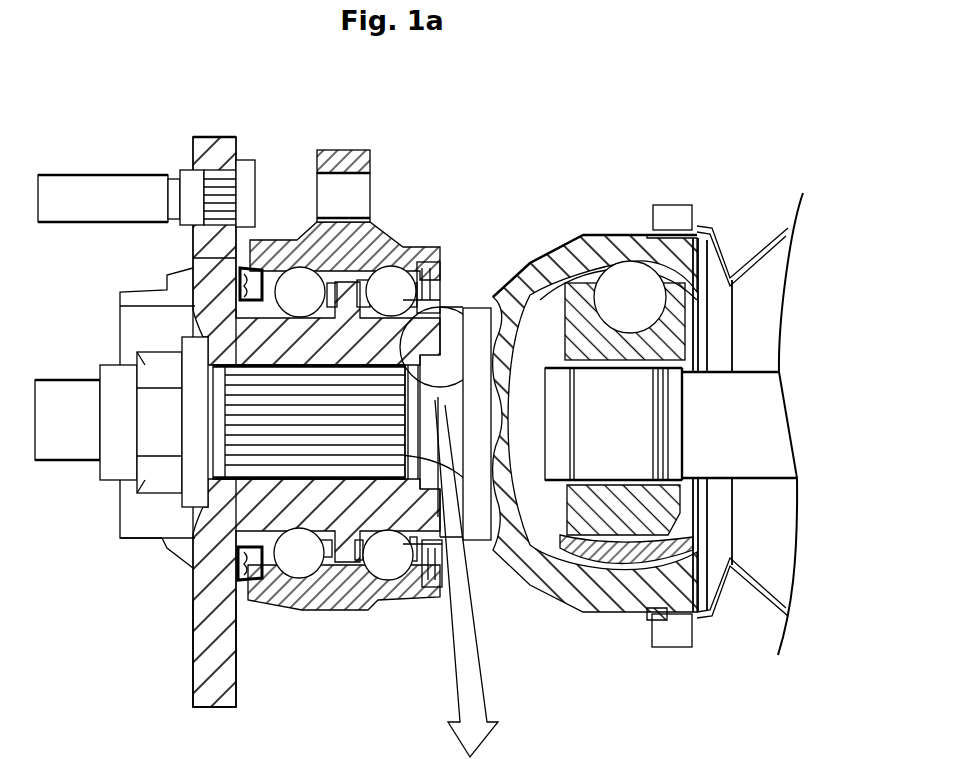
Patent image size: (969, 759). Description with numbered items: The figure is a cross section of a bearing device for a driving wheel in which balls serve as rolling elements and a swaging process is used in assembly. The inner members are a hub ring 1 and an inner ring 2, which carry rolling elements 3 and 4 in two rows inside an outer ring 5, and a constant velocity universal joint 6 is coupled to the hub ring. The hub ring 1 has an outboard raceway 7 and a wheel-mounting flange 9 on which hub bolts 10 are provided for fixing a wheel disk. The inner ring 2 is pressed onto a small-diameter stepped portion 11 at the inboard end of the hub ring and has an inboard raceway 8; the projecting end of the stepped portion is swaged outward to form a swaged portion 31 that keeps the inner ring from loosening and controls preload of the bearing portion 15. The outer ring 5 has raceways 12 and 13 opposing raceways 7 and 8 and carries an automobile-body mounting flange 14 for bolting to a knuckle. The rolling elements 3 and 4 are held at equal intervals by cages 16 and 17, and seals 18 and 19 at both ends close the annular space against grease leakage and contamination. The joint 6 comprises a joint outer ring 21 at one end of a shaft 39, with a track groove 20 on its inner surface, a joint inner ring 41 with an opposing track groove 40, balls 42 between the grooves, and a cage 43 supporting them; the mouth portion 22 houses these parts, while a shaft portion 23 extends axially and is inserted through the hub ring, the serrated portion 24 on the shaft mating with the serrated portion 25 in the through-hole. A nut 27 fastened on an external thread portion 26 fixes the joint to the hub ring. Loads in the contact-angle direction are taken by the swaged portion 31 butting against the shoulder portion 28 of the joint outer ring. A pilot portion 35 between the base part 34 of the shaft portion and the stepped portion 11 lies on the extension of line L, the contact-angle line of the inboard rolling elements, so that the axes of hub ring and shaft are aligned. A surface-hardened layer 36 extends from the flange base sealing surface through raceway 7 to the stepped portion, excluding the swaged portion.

The hub ring 1 is at (137, 557).
The inner ring 2 is at (436, 560).
The rolling elements 3 is at (190, 310).
The rolling elements 4 is at (397, 567).
The outer ring 5 is at (330, 607).
The constant velocity universal joint 6 is at (620, 227).
The outboard raceway 7 is at (257, 313).
The inboard raceway 8 is at (433, 565).
The wheel-mounting flange 9 is at (214, 137).
The hub bolts 10 is at (97, 175).
The small-diameter stepped portion 11 is at (487, 350).
The raceway 12 is at (267, 265).
The raceway 13 is at (377, 573).
The automobile-body mounting flange 14 is at (350, 150).
The bearing portion 15 is at (303, 620).
The cage 16 is at (297, 565).
The cage 17 is at (380, 278).
The seal 18 is at (192, 257).
The seal 19 is at (452, 311).
The track groove 20 is at (675, 312).
The joint outer ring 21 is at (630, 620).
The mouth portion 22 is at (593, 243).
The shaft portion 23 is at (250, 446).
The serrated portion 24 is at (190, 565).
The serrated portion 25 is at (468, 540).
The external thread portion 26 is at (52, 461).
The nut 27 is at (155, 418).
The shoulder portion 28 is at (477, 312).
The swaged portion 31 is at (472, 320).
The base part of the shaft portion 34 is at (500, 520).
The pilot portion 35 is at (192, 623).
The surface-hardened layer 36 is at (353, 287).
The shaft 39 is at (750, 472).
The track groove 40 is at (703, 323).
The joint inner ring 41 is at (597, 560).
The balls 42 is at (640, 280).
The cage 43 is at (683, 625).
The line of forming a contact angle L is at (405, 293).